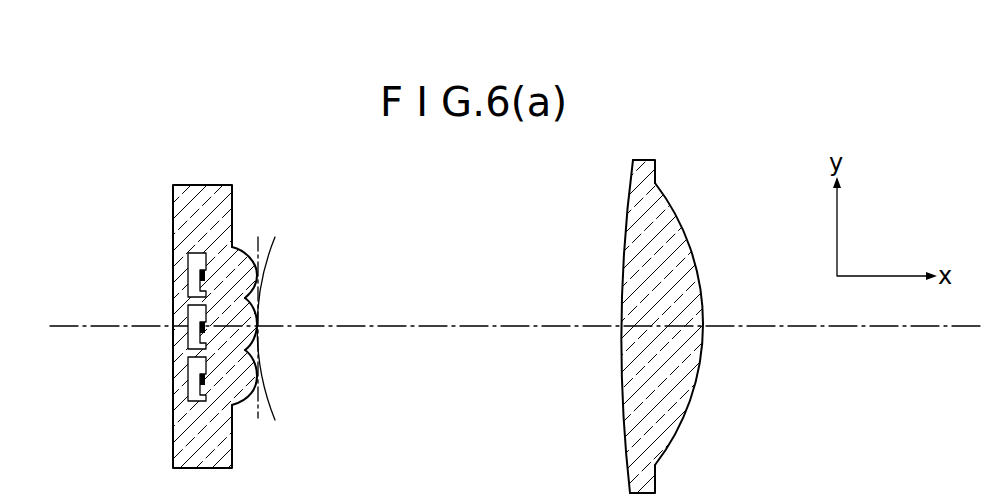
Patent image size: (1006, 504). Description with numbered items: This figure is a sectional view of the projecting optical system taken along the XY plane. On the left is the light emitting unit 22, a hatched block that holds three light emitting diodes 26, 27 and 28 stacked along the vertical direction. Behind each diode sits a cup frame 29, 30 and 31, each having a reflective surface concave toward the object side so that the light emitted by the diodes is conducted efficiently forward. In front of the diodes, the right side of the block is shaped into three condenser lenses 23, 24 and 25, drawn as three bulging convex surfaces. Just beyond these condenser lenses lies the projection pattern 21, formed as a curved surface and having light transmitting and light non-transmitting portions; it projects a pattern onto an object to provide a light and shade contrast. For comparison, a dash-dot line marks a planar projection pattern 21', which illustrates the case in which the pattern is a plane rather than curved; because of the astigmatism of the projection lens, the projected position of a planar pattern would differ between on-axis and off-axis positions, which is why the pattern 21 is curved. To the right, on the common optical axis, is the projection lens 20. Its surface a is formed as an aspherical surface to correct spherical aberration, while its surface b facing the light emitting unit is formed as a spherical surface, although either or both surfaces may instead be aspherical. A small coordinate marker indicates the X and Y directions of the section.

The projection lens 20 is at (650, 326).
The projection pattern 21 is at (296, 311).
The planar projection pattern 21' is at (262, 288).
The light emitting unit 22 is at (264, 296).
The condenser lens 23 is at (248, 273).
The condenser lens 24 is at (247, 323).
The condenser lens 25 is at (247, 374).
The light emitting diode 26 is at (202, 276).
The light emitting diode 27 is at (202, 328).
The light emitting diode 28 is at (202, 380).
The cup frame 29 is at (193, 288).
The cup frame 30 is at (194, 345).
The cup frame 31 is at (192, 399).
The surface a is at (699, 398).
The surface b is at (618, 418).